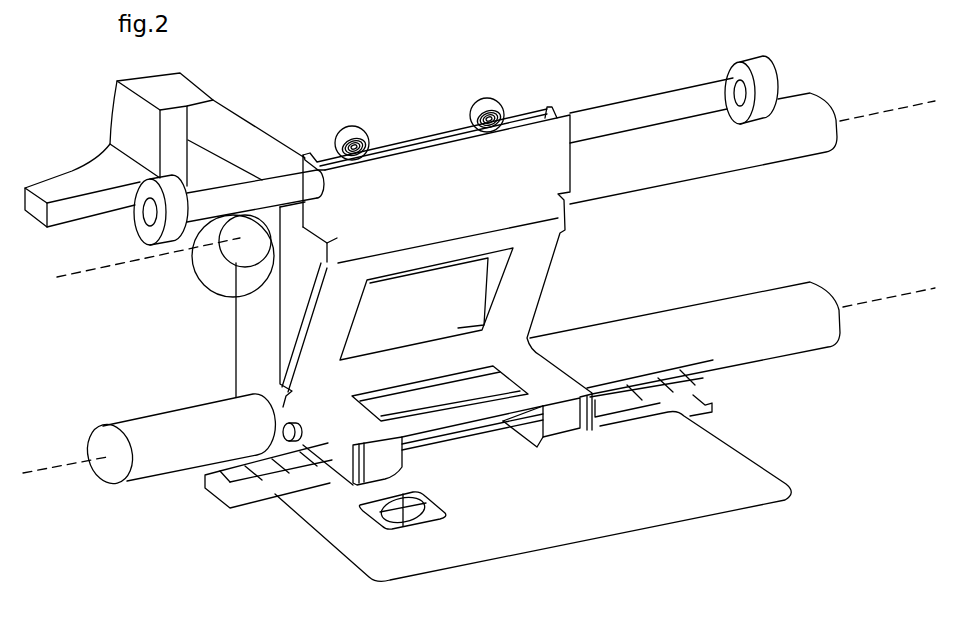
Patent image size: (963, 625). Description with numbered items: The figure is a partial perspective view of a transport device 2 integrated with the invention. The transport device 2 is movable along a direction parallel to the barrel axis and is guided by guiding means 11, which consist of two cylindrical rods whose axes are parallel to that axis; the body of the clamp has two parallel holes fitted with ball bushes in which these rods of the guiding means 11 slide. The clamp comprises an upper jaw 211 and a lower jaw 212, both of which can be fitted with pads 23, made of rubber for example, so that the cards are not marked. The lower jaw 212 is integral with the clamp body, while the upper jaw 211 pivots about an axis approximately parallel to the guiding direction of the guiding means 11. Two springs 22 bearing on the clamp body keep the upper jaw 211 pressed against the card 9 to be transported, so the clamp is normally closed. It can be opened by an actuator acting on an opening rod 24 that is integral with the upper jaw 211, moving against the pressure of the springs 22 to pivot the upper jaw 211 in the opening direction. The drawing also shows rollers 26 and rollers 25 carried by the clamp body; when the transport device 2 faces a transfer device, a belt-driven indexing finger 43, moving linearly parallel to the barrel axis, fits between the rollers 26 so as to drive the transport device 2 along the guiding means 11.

The transport device 2 is at (152, 362).
The card 9 is at (693, 505).
The guiding means 11 is at (710, 323).
The springs 22 is at (468, 118).
The pads 23 is at (558, 425).
The opening rod 24 is at (625, 110).
The pressure rollers 25 is at (243, 257).
The rollers 26 is at (208, 265).
The indexing finger 43 is at (230, 145).
The upper jaw 211 is at (553, 392).
The lower jaw 212 is at (712, 405).